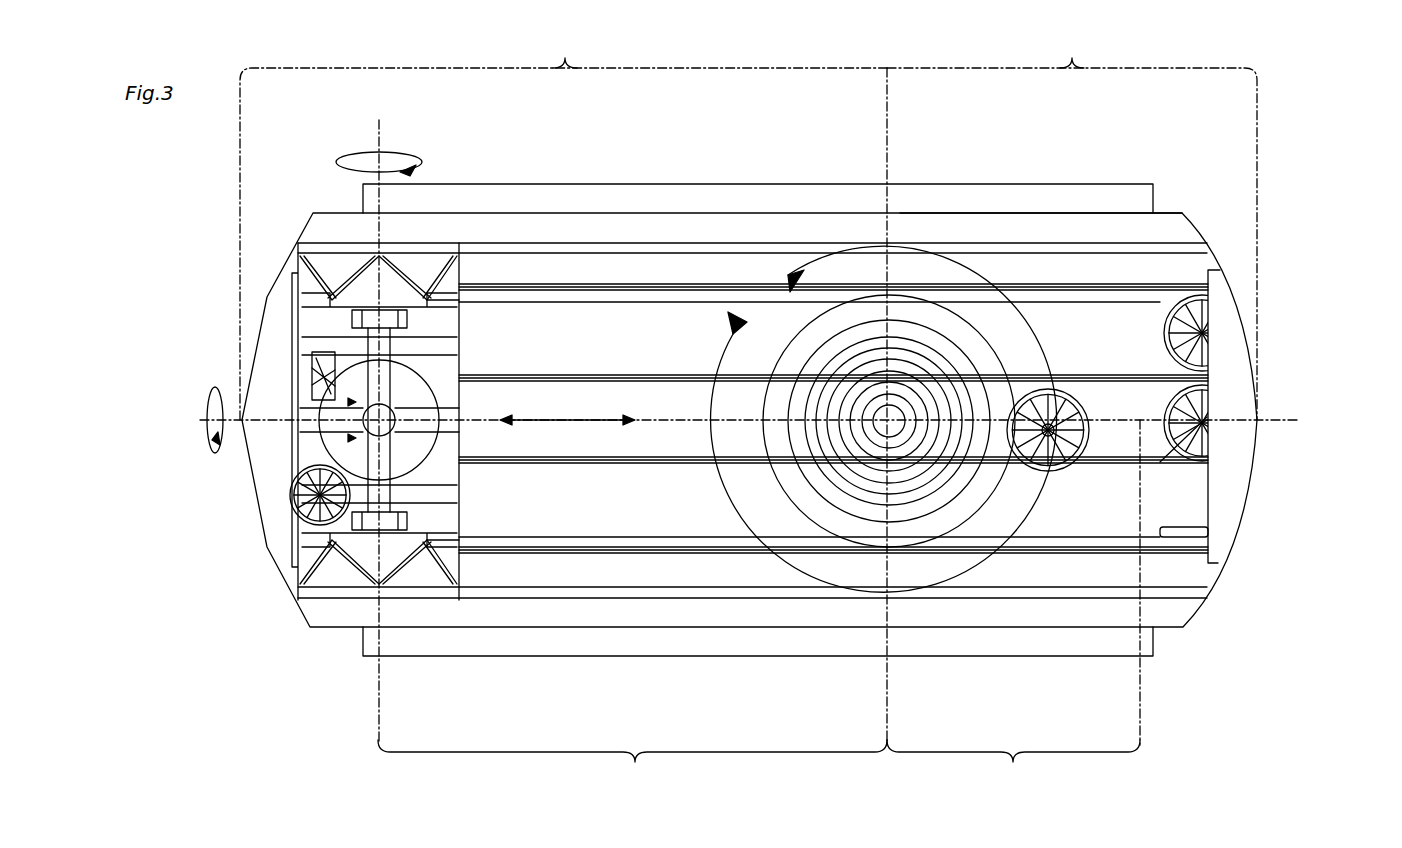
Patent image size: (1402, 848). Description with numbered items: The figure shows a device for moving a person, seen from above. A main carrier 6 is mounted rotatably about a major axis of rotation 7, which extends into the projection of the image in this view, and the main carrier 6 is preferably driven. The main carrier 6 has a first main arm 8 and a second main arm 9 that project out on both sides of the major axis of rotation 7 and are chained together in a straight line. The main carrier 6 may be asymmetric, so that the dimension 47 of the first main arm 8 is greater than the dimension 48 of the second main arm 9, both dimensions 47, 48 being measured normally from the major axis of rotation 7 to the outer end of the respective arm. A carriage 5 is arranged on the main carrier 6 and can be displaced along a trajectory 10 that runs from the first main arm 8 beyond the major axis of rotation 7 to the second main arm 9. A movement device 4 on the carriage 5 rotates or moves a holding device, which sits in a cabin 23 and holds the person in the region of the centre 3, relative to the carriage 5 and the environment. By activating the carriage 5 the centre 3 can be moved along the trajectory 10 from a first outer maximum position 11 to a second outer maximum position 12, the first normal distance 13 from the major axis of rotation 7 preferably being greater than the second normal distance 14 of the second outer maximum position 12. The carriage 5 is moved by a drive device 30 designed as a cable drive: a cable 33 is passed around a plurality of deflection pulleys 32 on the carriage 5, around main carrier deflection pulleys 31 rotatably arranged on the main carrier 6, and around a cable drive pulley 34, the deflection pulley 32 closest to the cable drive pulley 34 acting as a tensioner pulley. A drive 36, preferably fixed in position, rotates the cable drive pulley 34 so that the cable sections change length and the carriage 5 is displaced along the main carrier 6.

The centre 3 is at (300, 474).
The movement device 4 is at (350, 540).
The carriage 5 is at (440, 565).
The main carrier 6 is at (1168, 232).
The major axis of rotation 7 is at (897, 418).
The first main arm 8 is at (604, 204).
The second main arm 9 is at (1087, 204).
The trajectory 10 is at (663, 420).
The first outer maximum position 11 is at (377, 668).
The second outer maximum position 12 is at (1160, 670).
The first normal distance 13 is at (632, 766).
The second normal distance 14 is at (1013, 607).
The cabin 23 is at (335, 368).
The drive device 30 is at (1190, 465).
The main carrier deflection pulleys 31 is at (318, 392).
The deflection pulleys 32 is at (447, 330).
The cable 33 is at (1212, 420).
The cable drive pulley 34 is at (905, 455).
The drive 36 is at (893, 445).
The dimension of the first main arm 47 is at (563, 225).
The dimension of the second main arm 48 is at (1072, 225).